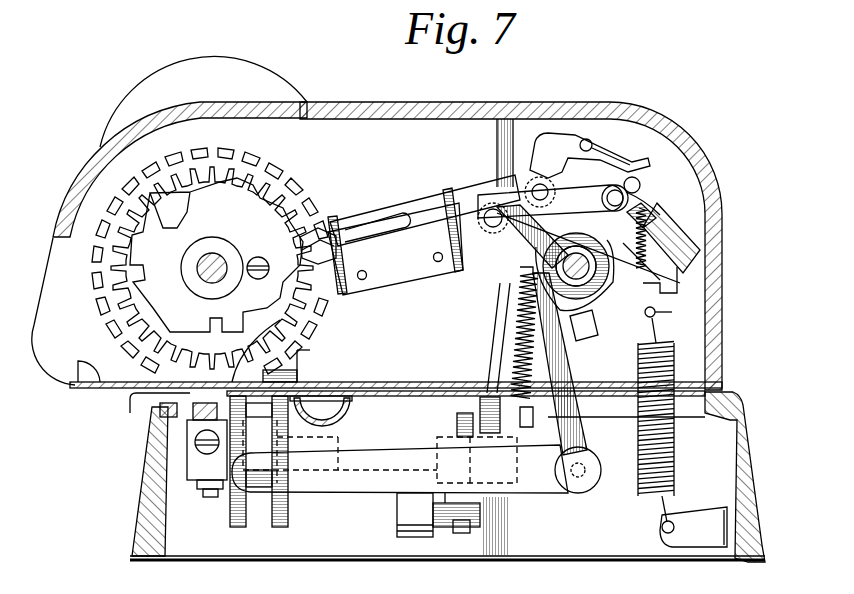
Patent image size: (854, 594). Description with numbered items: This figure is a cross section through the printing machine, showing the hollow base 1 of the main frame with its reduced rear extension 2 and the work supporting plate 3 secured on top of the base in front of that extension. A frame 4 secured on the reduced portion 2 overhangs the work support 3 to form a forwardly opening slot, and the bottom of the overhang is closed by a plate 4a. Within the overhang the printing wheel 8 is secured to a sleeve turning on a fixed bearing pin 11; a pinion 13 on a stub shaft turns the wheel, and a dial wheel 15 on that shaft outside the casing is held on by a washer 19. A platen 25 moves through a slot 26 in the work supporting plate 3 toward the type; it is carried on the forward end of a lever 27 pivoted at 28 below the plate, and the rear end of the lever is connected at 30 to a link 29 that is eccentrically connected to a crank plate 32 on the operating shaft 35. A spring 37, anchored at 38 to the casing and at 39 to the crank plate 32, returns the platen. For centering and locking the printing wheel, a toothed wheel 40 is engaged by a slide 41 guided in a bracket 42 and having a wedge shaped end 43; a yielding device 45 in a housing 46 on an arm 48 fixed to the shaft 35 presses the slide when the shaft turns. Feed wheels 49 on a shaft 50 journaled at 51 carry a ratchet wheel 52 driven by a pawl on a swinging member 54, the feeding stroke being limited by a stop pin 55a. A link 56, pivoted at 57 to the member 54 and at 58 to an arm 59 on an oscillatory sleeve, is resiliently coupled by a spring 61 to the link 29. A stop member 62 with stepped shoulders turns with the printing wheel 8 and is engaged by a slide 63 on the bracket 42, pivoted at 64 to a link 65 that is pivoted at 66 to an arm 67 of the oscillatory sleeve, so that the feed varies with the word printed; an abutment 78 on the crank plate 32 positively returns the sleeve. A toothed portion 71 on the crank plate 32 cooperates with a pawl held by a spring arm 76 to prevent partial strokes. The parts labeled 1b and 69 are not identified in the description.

The hollow base 1 is at (155, 488).
The pawl 1b is at (264, 351).
The reduced extension 2 is at (743, 470).
The work supporting plate 3 is at (368, 387).
The frame 4 is at (348, 105).
The plate 4a is at (408, 389).
The printing wheel 8 is at (280, 178).
The bearing pin 11 is at (218, 262).
The pinion 13 is at (232, 150).
The dial wheel 15 is at (202, 72).
The washer 19 is at (557, 330).
The platen 25 is at (165, 435).
The slot 26 is at (197, 397).
The lever 27 is at (408, 470).
The pivot 28 is at (332, 398).
The link 29 is at (570, 379).
The pivotal connection 30 is at (580, 470).
The crank plate 32 is at (608, 282).
The operating shaft 35 is at (700, 290).
The spring 37 is at (676, 453).
The spring anchorage 38 is at (682, 513).
The spring anchorage 39 is at (657, 312).
The toothed wheel 40 is at (260, 180).
The slide 41 is at (326, 242).
The bracket 42 is at (395, 241).
The end 43 is at (320, 222).
The yieldingly mounted device 45 is at (624, 218).
The housing 46 is at (660, 223).
The arm 48 is at (683, 240).
The feed wheels 49 is at (265, 513).
The shaft 50 is at (357, 460).
The journal 51 is at (495, 295).
The ratchet wheel 52 is at (470, 413).
The swinging member 54 is at (477, 518).
The stop pin 55a is at (445, 527).
The link 56 is at (500, 338).
The pivotal connection 57 is at (505, 425).
The pivotal connection 58 is at (480, 270).
The arm 59 is at (500, 210).
The spring 61 is at (520, 361).
The stop or gage member 62 is at (216, 255).
The slide 63 is at (414, 218).
The pivotal connection 64 is at (548, 186).
The link 65 is at (572, 190).
The pivot 66 is at (628, 180).
The arm 67 is at (660, 190).
The stop 69 is at (298, 360).
The toothed portion 71 is at (693, 267).
The spring arm 76 is at (600, 180).
The abutment 78 is at (585, 339).